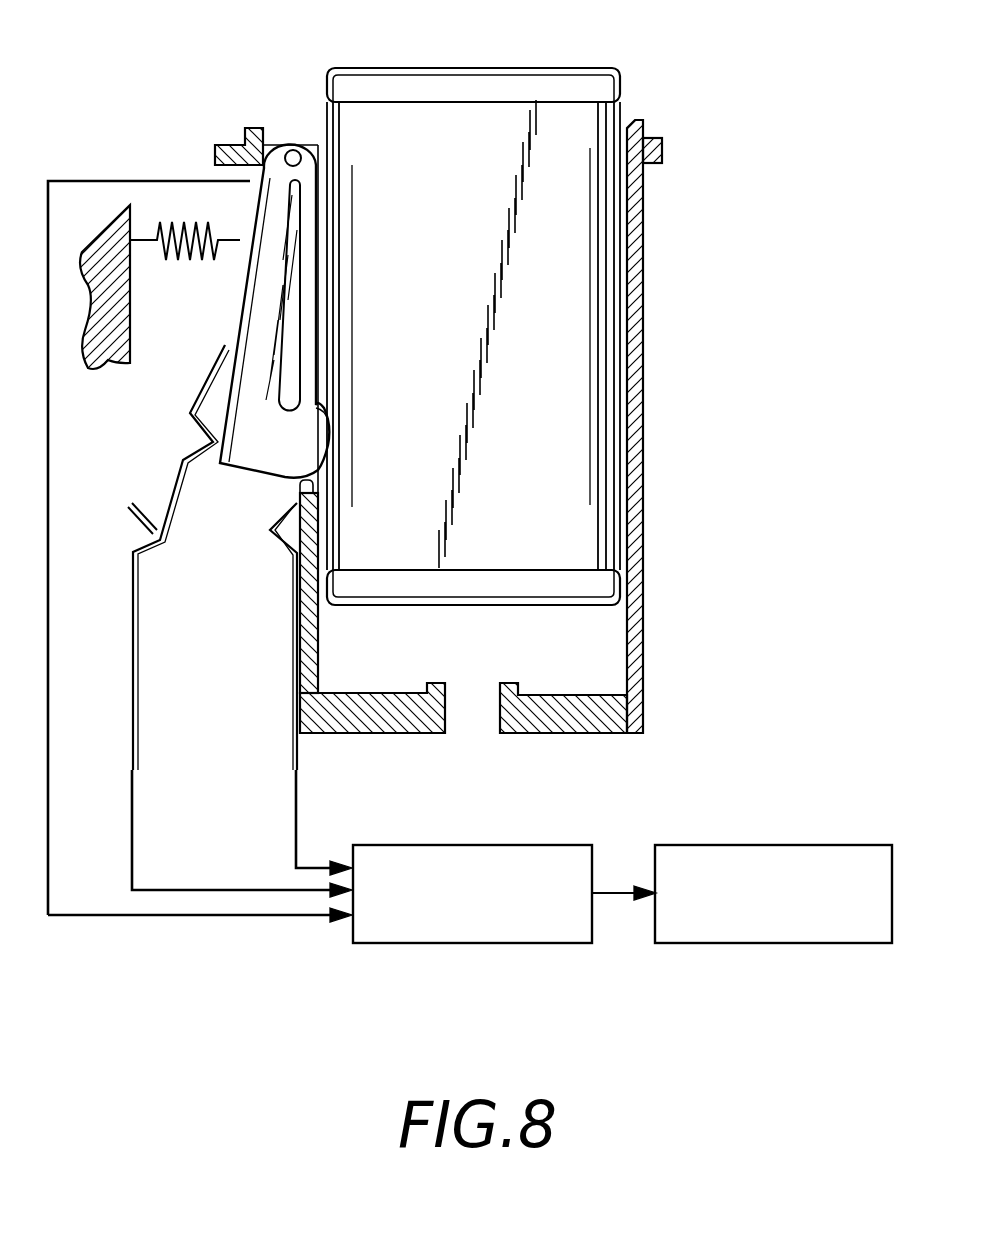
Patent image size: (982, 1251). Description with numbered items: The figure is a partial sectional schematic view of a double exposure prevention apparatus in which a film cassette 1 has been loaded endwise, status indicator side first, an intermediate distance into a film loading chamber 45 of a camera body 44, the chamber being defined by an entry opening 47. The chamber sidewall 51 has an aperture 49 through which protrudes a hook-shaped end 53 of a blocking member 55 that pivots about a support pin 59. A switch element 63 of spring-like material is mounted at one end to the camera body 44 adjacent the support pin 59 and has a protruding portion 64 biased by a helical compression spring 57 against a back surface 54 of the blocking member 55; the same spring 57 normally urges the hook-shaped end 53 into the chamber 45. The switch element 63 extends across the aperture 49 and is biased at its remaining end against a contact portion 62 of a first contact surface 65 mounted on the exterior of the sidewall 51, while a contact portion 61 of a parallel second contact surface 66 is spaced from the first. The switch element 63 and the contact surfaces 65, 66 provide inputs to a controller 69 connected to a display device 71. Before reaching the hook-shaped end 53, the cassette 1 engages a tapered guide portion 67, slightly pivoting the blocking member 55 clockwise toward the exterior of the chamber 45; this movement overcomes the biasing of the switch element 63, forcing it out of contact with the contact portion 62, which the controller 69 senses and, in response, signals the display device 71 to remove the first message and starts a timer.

The film cassette 1 is at (475, 68).
The camera body 44 is at (360, 733).
The film loading chamber 45 is at (590, 648).
The entry opening 47 is at (632, 118).
The aperture 49 is at (290, 505).
The sidewall 51 is at (645, 470).
The hook-shaped end 53 is at (320, 428).
The back surface 54 is at (215, 410).
The blocking member 55 is at (245, 362).
The helical compression spring 57 is at (200, 262).
The support pin 59 is at (292, 148).
The contact portion 61 is at (130, 540).
The contact portion 62 is at (270, 540).
The switch element 63 is at (175, 478).
The protruding portion 64 is at (193, 445).
The first contact surface 65 is at (300, 628).
The second contact surface 66 is at (136, 693).
The guide portion 67 is at (285, 355).
The controller 69 is at (483, 845).
The display device 71 is at (777, 845).